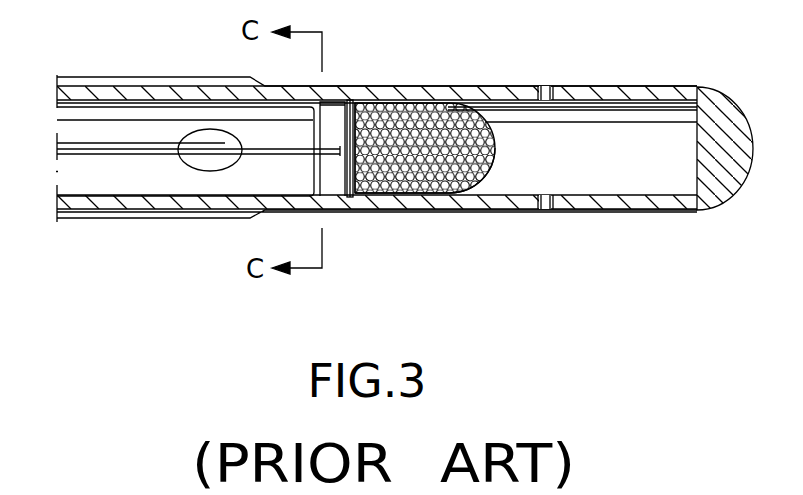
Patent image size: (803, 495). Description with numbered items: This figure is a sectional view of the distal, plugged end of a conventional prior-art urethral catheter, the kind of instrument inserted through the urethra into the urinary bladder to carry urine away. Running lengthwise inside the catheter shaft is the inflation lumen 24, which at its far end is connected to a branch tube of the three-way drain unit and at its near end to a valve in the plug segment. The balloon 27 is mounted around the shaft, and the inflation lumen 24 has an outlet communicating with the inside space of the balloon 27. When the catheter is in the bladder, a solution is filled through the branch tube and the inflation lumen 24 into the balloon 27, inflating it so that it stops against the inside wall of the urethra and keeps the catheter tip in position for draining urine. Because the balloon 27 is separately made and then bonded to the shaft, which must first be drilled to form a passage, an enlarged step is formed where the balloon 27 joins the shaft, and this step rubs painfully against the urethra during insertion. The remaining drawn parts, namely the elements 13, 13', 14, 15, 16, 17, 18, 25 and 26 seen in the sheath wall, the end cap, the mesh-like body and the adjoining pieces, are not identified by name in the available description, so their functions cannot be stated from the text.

The outer sheath 13 is at (376, 132).
The distal end cap 13' is at (634, 173).
The collar 14 is at (416, 93).
The rounded tip of mesh body 15 is at (493, 196).
The proximal end of mesh body 16 is at (375, 93).
The mesh body 17 is at (448, 93).
The lower edge of mesh body 18 is at (428, 195).
The inflation lumen 24 is at (298, 158).
The plug 25 is at (333, 158).
The wire 26 is at (213, 166).
The balloon 27 is at (202, 80).